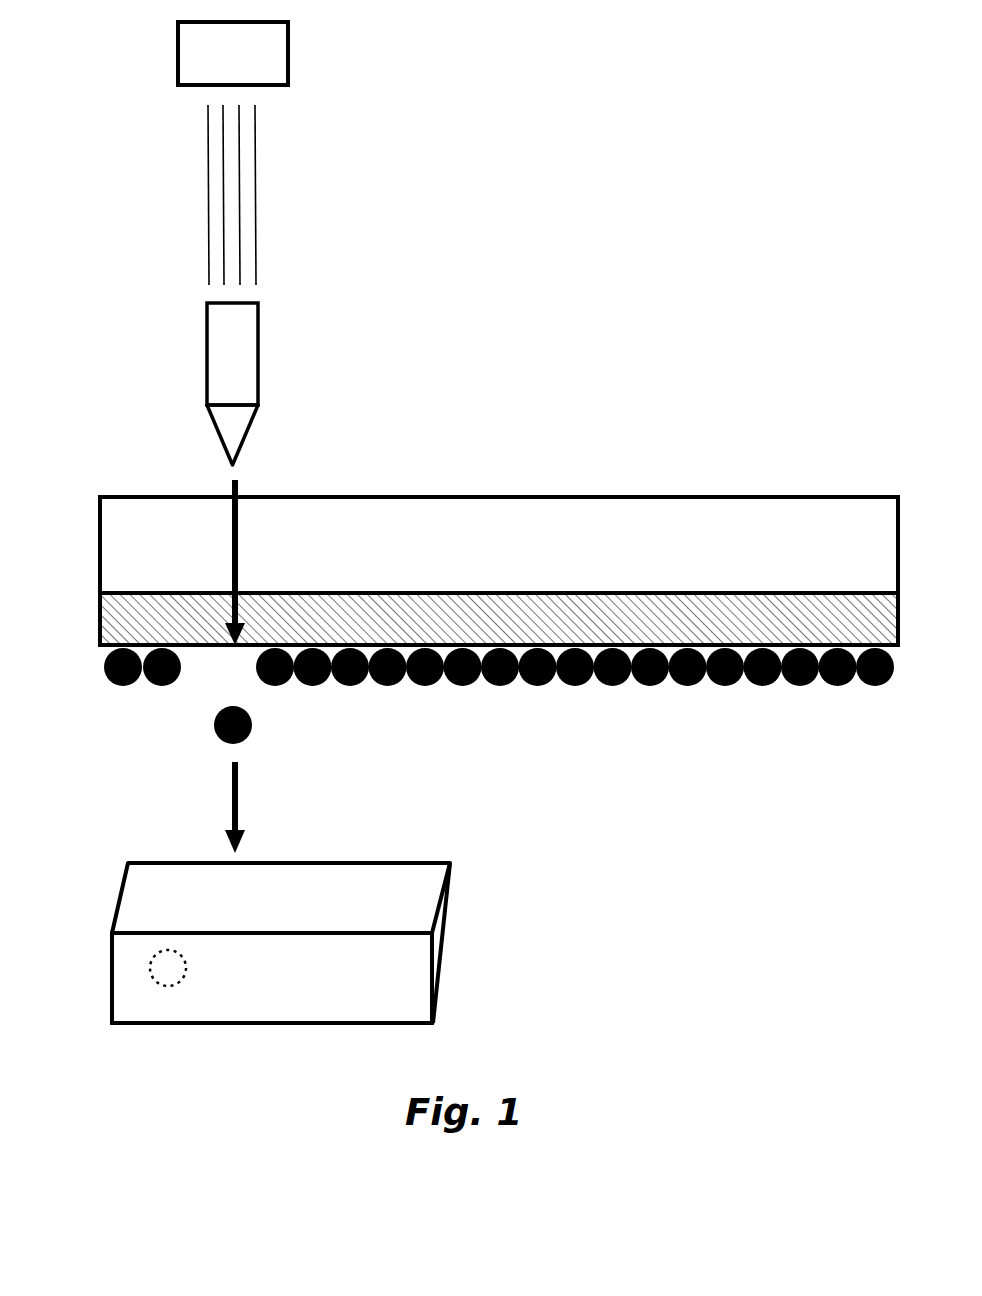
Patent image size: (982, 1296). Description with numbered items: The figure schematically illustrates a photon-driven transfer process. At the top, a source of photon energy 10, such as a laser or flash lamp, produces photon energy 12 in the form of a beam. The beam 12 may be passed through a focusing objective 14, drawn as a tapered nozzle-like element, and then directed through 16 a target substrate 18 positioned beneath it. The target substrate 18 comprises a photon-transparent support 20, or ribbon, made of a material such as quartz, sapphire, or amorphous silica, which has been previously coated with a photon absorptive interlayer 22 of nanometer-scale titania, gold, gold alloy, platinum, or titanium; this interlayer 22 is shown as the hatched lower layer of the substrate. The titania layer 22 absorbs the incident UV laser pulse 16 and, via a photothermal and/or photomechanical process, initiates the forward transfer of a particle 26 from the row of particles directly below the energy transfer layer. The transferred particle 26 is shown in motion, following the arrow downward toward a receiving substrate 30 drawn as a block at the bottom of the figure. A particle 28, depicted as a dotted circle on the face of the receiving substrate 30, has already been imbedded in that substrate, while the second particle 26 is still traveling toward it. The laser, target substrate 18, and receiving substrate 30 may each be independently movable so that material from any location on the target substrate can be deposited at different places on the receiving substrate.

The source of photon energy 10 is at (233, 53).
The photon energy 12 is at (273, 210).
The focusing objective 14 is at (232, 384).
The incident UV laser pulse 16 is at (273, 508).
The target substrate 18 is at (107, 477).
The photon-transparent support 20 is at (499, 545).
The photon absorptive interlayer 22 is at (95, 620).
The particle 26 is at (268, 733).
The particle 28 is at (138, 952).
The receiving substrate 30 is at (98, 1030).